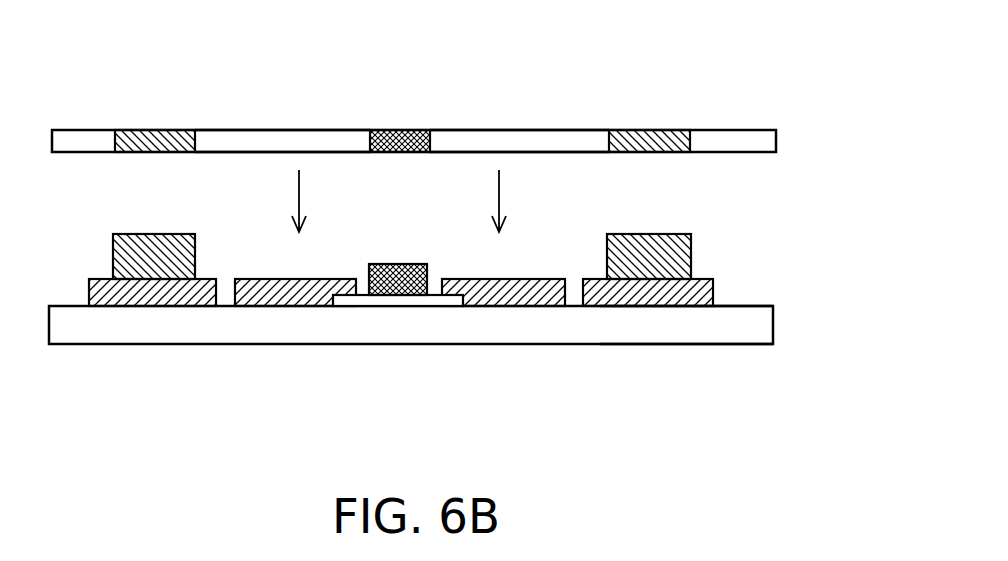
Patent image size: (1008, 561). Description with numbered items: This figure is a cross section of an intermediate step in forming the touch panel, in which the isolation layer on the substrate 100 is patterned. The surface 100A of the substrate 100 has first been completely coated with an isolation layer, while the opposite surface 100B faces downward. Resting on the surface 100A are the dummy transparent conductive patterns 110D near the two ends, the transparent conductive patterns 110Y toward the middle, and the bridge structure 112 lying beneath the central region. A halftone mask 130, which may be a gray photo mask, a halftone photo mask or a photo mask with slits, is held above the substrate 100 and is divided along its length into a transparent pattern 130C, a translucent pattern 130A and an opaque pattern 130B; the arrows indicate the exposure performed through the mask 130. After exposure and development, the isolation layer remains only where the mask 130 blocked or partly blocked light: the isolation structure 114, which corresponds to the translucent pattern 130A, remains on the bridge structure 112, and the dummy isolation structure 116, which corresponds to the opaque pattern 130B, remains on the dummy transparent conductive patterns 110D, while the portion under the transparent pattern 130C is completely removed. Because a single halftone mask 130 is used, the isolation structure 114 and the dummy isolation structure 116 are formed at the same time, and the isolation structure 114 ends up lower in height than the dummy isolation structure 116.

The substrate 100 is at (760, 325).
The surface of substrate 100A is at (745, 304).
The second surface of substrate 100B is at (745, 347).
The dummy transparent conductive patterns 110D is at (152, 306).
The pad 110Y is at (302, 306).
The bridge structure 112 is at (403, 306).
The isolation structure 114 is at (401, 264).
The dummy isolation structure 116 is at (113, 238).
The halftone mask 130 is at (780, 141).
The translucent pattern 130A is at (402, 130).
The opaque pattern 130B is at (158, 130).
The transparent pattern 130C is at (298, 142).